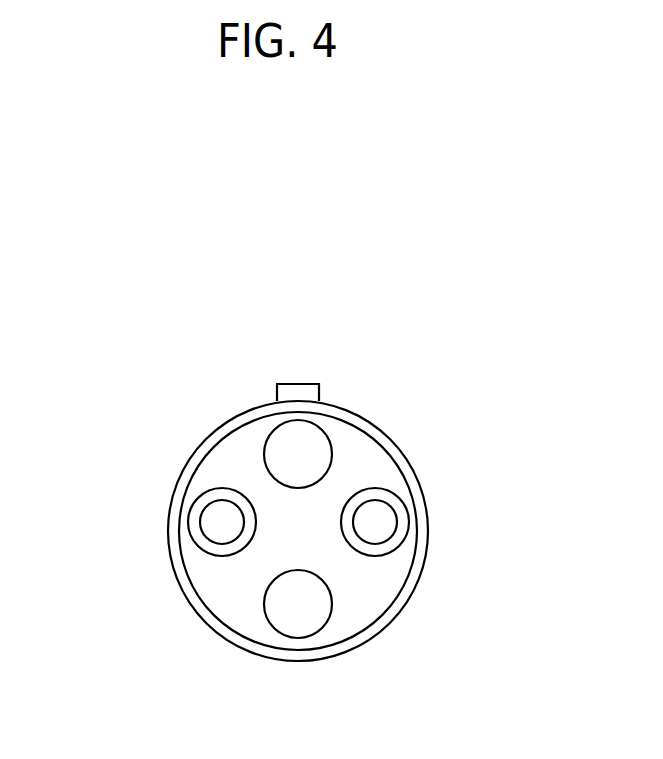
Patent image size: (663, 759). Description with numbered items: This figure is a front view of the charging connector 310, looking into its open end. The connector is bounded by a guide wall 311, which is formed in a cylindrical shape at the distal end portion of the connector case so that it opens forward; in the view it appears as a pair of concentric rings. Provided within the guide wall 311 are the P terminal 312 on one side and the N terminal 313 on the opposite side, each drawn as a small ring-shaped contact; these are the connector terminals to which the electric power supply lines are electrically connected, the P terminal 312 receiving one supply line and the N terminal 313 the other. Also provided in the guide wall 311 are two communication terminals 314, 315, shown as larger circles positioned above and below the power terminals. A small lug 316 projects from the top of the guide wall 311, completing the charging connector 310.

The charging connector 310 is at (422, 167).
The guide wall 311 is at (347, 407).
The P terminal 312 is at (200, 525).
The N terminal 313 is at (373, 510).
The communication terminal 314 is at (283, 433).
The communication terminal 315 is at (292, 582).
The lug 316 is at (307, 392).